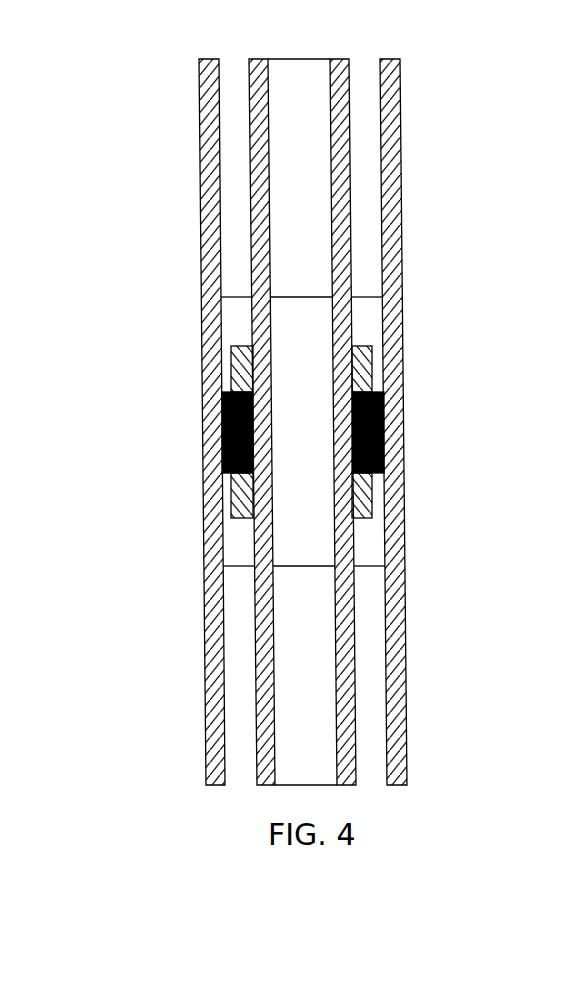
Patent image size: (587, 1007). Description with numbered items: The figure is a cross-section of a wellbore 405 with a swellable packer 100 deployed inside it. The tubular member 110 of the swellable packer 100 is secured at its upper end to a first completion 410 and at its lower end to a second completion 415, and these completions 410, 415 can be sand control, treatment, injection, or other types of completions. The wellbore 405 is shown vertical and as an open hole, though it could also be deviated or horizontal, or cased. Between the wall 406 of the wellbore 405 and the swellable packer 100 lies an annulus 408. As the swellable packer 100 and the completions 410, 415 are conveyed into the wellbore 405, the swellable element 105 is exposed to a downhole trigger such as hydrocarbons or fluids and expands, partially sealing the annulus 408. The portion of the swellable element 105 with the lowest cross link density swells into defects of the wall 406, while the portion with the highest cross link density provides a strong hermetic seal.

The wellbore 405 is at (235, 70).
The first completion 410 is at (392, 140).
The tubular member 110 is at (240, 332).
The annulus 408 is at (228, 368).
The swellable packer 100 is at (364, 353).
The swellable element 105 is at (385, 414).
The wall 406 is at (200, 497).
The second completion 415 is at (396, 610).